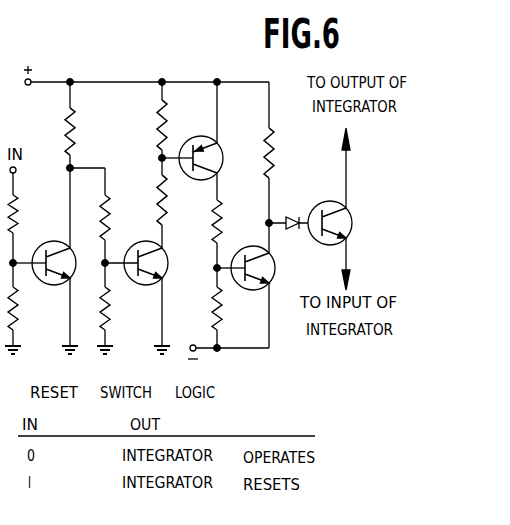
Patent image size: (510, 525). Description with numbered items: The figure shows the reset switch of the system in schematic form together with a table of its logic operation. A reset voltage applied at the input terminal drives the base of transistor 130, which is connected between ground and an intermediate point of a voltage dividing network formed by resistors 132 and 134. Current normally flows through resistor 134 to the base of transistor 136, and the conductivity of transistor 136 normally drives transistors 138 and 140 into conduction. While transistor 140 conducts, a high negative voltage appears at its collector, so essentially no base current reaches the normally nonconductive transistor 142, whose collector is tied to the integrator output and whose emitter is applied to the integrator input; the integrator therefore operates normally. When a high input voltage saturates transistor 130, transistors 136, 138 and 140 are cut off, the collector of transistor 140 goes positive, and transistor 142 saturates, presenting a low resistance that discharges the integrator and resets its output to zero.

The transistor 130 is at (57, 242).
The resistor 132 is at (76, 131).
The resistor 134 is at (110, 220).
The transistor 136 is at (133, 245).
The transistor 138 is at (205, 126).
The transistor 140 is at (243, 249).
The transistor 142 is at (334, 188).